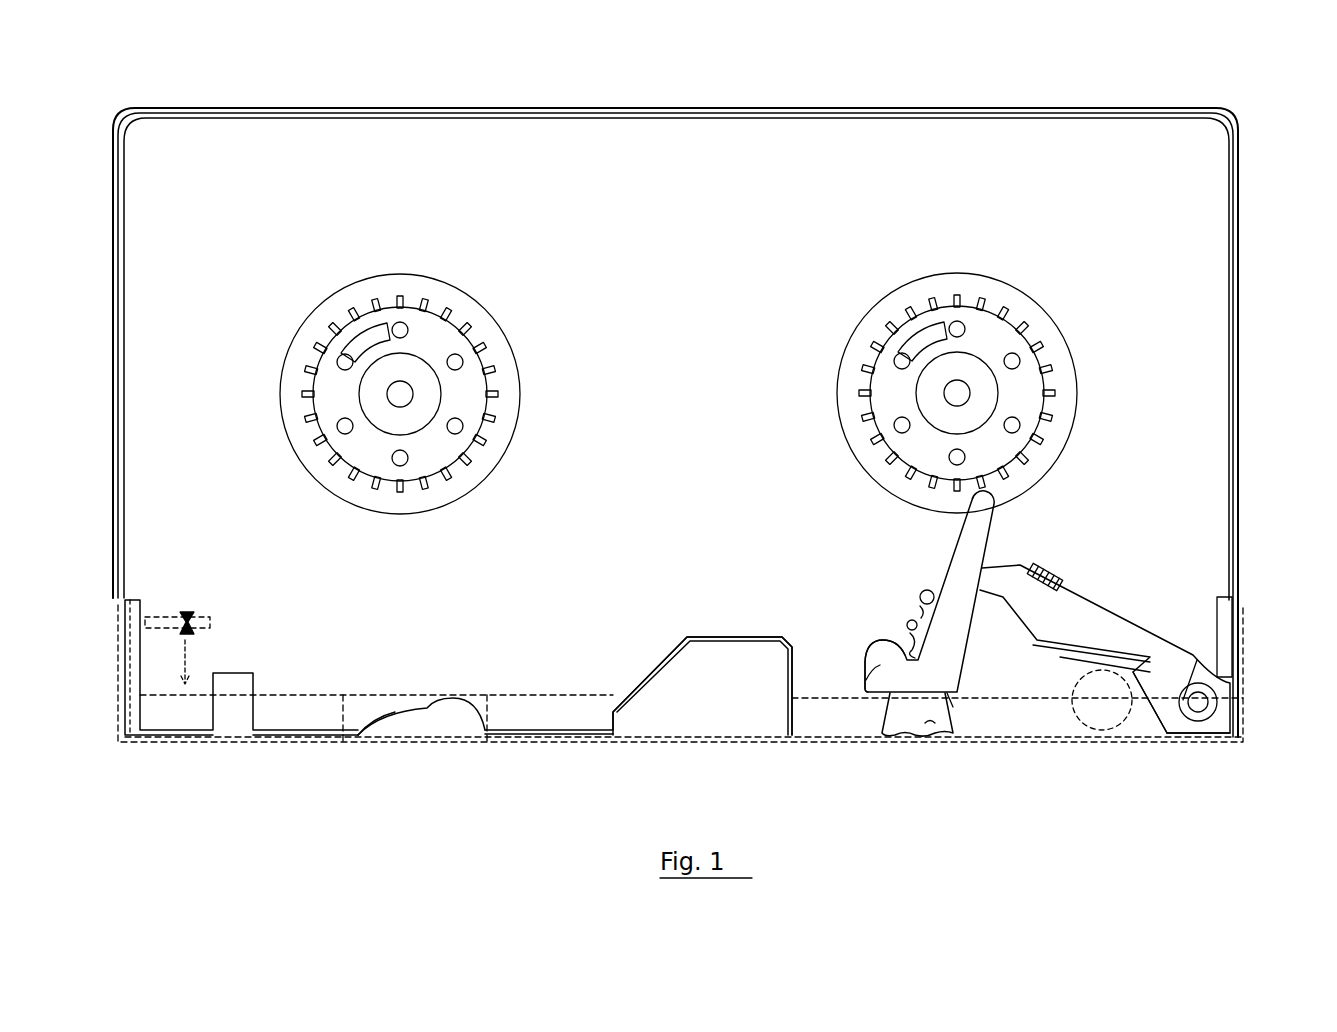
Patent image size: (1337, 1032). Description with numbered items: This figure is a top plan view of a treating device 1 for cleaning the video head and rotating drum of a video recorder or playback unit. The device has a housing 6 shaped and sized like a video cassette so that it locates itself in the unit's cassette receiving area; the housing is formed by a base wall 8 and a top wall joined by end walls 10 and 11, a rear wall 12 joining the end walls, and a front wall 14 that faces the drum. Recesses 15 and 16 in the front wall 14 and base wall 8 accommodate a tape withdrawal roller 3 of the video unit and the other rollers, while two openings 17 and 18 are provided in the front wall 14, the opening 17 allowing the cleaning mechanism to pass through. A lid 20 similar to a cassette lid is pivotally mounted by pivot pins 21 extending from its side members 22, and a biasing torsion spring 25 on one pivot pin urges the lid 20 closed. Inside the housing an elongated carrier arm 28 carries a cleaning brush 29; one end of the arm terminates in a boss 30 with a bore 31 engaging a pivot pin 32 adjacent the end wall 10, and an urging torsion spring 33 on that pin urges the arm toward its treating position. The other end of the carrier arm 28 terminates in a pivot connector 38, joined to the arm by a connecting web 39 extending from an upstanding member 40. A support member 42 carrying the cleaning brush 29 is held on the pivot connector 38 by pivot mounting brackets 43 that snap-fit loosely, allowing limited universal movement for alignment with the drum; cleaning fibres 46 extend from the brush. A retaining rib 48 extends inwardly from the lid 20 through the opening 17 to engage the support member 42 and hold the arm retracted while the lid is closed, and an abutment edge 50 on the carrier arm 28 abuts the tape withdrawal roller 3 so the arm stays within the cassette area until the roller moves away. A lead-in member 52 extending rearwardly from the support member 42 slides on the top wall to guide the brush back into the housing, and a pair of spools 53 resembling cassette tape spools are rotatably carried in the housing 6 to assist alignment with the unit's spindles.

The treating device 1 is at (168, 797).
The tape withdrawal roller 3 is at (1103, 730).
The housing 6 is at (1238, 358).
The base wall 8 is at (672, 145).
The end wall 10 is at (1238, 422).
The end wall 11 is at (115, 470).
The rear wall 12 is at (830, 108).
The front wall 14 is at (520, 735).
The recess 15 is at (427, 720).
The recess 16 is at (1150, 710).
The opening 17 is at (847, 740).
The opening 18 is at (358, 735).
The lid 20 is at (680, 735).
The pivot pin 21 is at (190, 613).
The side member 22 is at (118, 655).
The biasing torsion spring 25 is at (190, 665).
The carrier arm 28 is at (1092, 612).
The cleaning brush 29 is at (930, 723).
The boss 30 is at (1200, 732).
The bore 31 is at (1215, 715).
The pivot pin 32 is at (1205, 700).
The urging torsion spring 33 is at (1023, 565).
The pivot connector 38 is at (907, 640).
The connecting web 39 is at (918, 613).
The upstanding member 40 is at (922, 590).
The support member 42 is at (877, 670).
The pivot mounting bracket 43 is at (906, 622).
The cleaning fibres 46 is at (908, 723).
The retaining rib 48 is at (955, 707).
The abutment edge 50 is at (1063, 657).
The lead-in member 52 is at (960, 557).
The spool 53 is at (478, 355).